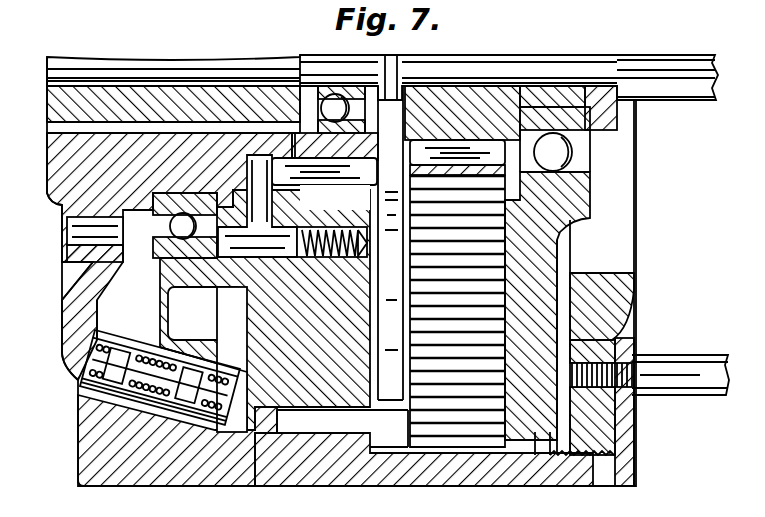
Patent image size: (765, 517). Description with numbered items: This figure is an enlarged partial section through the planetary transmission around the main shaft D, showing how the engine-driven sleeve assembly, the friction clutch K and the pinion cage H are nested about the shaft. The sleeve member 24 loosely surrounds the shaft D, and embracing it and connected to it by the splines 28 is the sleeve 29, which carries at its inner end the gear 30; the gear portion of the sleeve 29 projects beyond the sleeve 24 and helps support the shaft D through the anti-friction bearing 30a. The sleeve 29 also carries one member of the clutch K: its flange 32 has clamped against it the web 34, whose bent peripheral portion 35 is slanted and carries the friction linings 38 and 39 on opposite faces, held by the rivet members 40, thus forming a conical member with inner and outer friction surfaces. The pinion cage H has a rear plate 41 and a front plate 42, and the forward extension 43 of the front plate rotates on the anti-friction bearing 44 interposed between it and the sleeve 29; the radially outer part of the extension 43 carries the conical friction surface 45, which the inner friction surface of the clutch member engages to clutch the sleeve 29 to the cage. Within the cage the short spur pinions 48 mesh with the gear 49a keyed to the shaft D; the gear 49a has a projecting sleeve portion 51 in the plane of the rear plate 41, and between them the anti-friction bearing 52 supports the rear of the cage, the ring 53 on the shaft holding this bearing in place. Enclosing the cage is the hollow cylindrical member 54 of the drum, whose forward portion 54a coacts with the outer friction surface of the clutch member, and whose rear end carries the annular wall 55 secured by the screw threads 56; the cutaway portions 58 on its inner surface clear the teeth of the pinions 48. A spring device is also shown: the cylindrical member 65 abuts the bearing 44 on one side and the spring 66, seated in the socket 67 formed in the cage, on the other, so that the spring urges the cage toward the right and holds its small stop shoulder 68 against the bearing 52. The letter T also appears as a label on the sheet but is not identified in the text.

The main shaft D is at (80, 68).
The sleeve member 24 is at (58, 106).
The splines 28 is at (47, 128).
The sleeve 29 is at (47, 177).
The gear 30 is at (291, 165).
The anti-friction bearing 30a is at (334, 104).
The flange 32 is at (67, 258).
The web 34 is at (88, 288).
The bent peripheral portion 35 is at (230, 403).
The friction lining 38 is at (110, 407).
The friction lining 39 is at (120, 362).
The rivet members 40 is at (116, 387).
The rear plate 41 is at (540, 271).
The front plate 42 is at (268, 420).
The forward extension 43 is at (188, 276).
The anti-friction bearing 44 is at (172, 231).
The friction surface 45 is at (185, 342).
The short spur pinions 48 is at (490, 312).
The gear 49a is at (437, 118).
The sleeve portion 51 is at (558, 104).
The anti-friction bearing 52 is at (563, 152).
The ring 53 is at (600, 95).
The hollow cylindrical member 54 is at (498, 476).
The forward portion 54a is at (103, 445).
The wall 55 is at (605, 430).
The screw threads 56 is at (612, 462).
The cutaway portions 58 is at (400, 445).
The cylindrical member 65 is at (193, 268).
The spring 66 is at (313, 230).
The socket 67 is at (337, 230).
The stop shoulder 68 is at (636, 178).
The pinion cage H is at (556, 242).
The friction clutch K is at (110, 376).
The base plate T is at (143, 488).